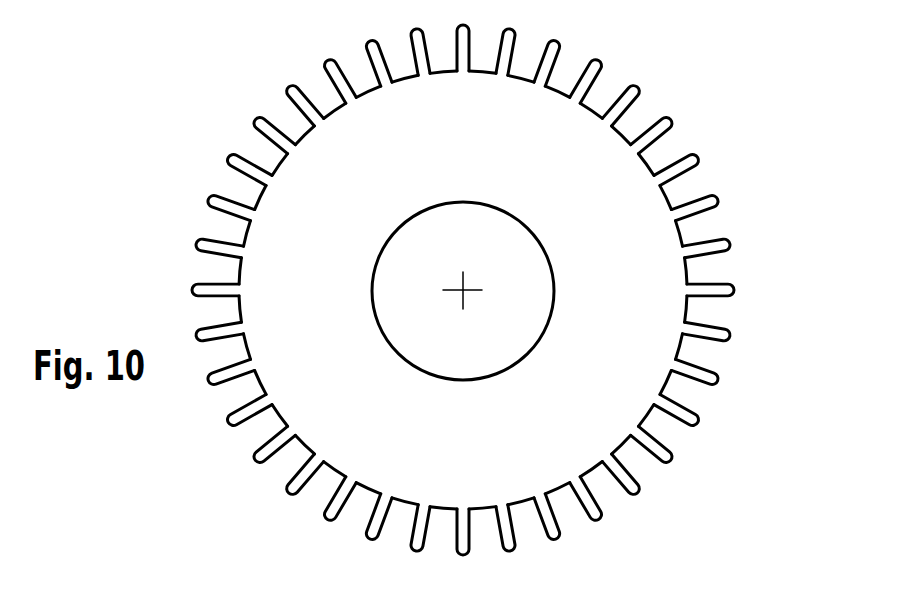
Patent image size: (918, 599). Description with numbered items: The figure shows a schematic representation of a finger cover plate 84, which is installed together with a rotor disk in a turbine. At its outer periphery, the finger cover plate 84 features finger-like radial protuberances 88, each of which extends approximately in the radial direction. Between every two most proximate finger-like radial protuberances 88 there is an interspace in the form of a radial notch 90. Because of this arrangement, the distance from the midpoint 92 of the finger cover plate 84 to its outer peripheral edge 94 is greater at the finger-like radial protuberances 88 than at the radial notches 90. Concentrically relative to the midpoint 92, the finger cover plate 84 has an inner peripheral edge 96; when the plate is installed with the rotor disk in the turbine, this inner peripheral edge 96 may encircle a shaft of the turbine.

The finger cover plate 84 is at (293, 213).
The finger-like radial protuberance 88 is at (655, 133).
The radial notch 90 is at (685, 188).
The midpoint 92 is at (464, 289).
The outer peripheral edge 94 is at (603, 60).
The inner peripheral edge 96 is at (467, 202).